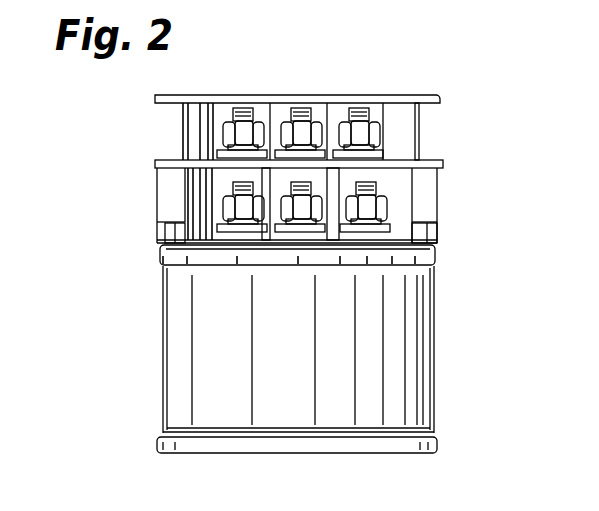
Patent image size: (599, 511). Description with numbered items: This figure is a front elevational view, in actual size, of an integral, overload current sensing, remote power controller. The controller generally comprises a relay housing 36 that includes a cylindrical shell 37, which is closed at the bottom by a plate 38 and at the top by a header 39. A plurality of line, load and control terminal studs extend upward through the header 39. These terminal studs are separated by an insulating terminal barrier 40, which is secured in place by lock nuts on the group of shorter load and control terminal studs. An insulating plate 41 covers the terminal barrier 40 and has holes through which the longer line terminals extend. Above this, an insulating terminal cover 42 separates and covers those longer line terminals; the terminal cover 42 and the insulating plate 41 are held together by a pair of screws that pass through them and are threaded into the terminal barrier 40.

The relay housing 36 is at (152, 322).
The cylindrical shell 37 is at (410, 345).
The plate 38 is at (436, 445).
The header 39 is at (438, 257).
The insulating terminal barrier 40 is at (435, 198).
The insulating plate 41 is at (440, 168).
The insulating terminal cover 42 is at (406, 123).